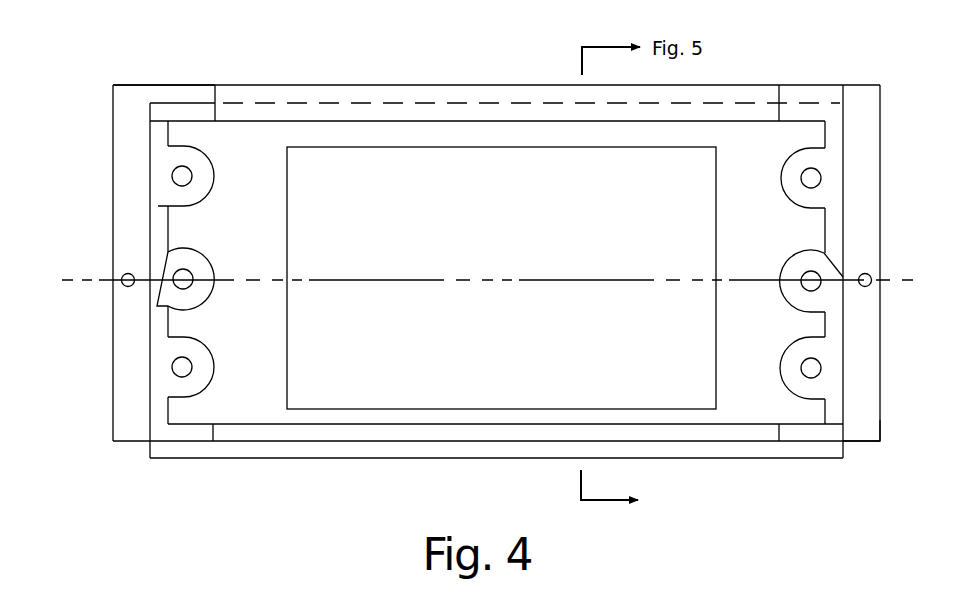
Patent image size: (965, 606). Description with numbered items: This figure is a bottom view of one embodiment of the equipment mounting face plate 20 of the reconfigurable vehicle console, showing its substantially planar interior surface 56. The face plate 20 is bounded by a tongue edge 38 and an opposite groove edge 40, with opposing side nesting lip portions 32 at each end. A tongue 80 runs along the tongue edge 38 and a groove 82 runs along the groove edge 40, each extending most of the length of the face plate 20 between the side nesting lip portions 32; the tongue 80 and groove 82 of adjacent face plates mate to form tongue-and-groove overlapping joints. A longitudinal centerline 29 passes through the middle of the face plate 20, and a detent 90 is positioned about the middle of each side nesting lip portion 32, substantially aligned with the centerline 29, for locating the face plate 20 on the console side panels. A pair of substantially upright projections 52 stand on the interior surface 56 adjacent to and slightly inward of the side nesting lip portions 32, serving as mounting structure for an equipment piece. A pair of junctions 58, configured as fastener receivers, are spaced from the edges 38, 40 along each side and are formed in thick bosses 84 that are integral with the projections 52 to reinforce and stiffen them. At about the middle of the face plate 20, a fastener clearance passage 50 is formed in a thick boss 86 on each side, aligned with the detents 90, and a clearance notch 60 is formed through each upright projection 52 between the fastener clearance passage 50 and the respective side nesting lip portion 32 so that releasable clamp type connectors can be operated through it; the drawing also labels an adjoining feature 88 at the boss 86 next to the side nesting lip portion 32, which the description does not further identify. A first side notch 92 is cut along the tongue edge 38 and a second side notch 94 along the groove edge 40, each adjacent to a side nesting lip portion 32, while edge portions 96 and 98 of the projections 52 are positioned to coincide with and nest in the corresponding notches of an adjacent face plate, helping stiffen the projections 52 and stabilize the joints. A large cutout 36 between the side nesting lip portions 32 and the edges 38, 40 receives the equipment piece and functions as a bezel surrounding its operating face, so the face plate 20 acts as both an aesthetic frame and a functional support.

The face plate 20 is at (113, 367).
The longitudinal centerline 29 is at (640, 280).
The side nesting lip portion 32 is at (127, 107).
The cutout 36 is at (427, 147).
The tongue edge 38 is at (850, 443).
The groove edge 40 is at (193, 83).
The fastener clearance passage 50 is at (190, 277).
The upright projection 52 is at (155, 105).
The interior surface 56 is at (493, 130).
The junction 58 is at (172, 172).
The clearance notch 60 is at (158, 210).
The tongue 80 is at (148, 450).
The groove 82 is at (357, 85).
The thick boss 84 is at (207, 167).
The thick boss 86 is at (192, 299).
The upper tab 88 is at (173, 252).
The detent 90 is at (121, 287).
The first side notch 92 is at (800, 435).
The second side notch 94 is at (195, 112).
The edge portion 96 is at (800, 95).
The edge portion 98 is at (182, 435).